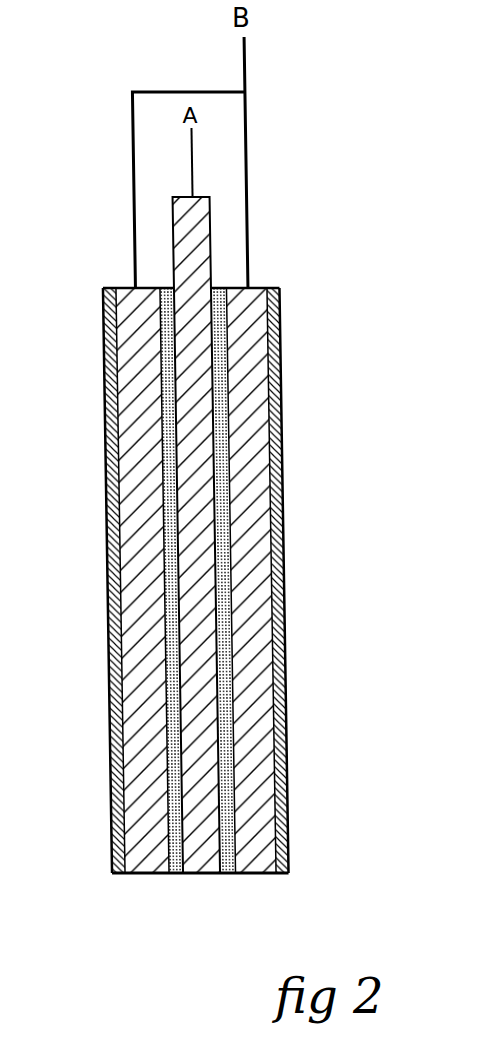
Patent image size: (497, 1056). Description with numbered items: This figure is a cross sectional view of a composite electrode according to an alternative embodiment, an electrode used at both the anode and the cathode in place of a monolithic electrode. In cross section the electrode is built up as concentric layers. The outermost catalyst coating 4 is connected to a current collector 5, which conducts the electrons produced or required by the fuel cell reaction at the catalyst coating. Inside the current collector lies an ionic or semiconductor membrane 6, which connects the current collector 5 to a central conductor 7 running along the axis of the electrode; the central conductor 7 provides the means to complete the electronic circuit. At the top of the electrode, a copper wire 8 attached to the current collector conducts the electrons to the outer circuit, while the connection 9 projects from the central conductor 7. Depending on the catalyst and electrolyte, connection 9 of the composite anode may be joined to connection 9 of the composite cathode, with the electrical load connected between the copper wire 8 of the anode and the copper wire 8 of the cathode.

The catalyst coating 4 is at (333, 583).
The current collector 5 is at (332, 507).
The ionic or semiconductor membrane 6 is at (332, 443).
The central conductor 7 is at (198, 360).
The copper wire 8 is at (328, 225).
The external electrical connection of the central conductor 9 is at (193, 135).